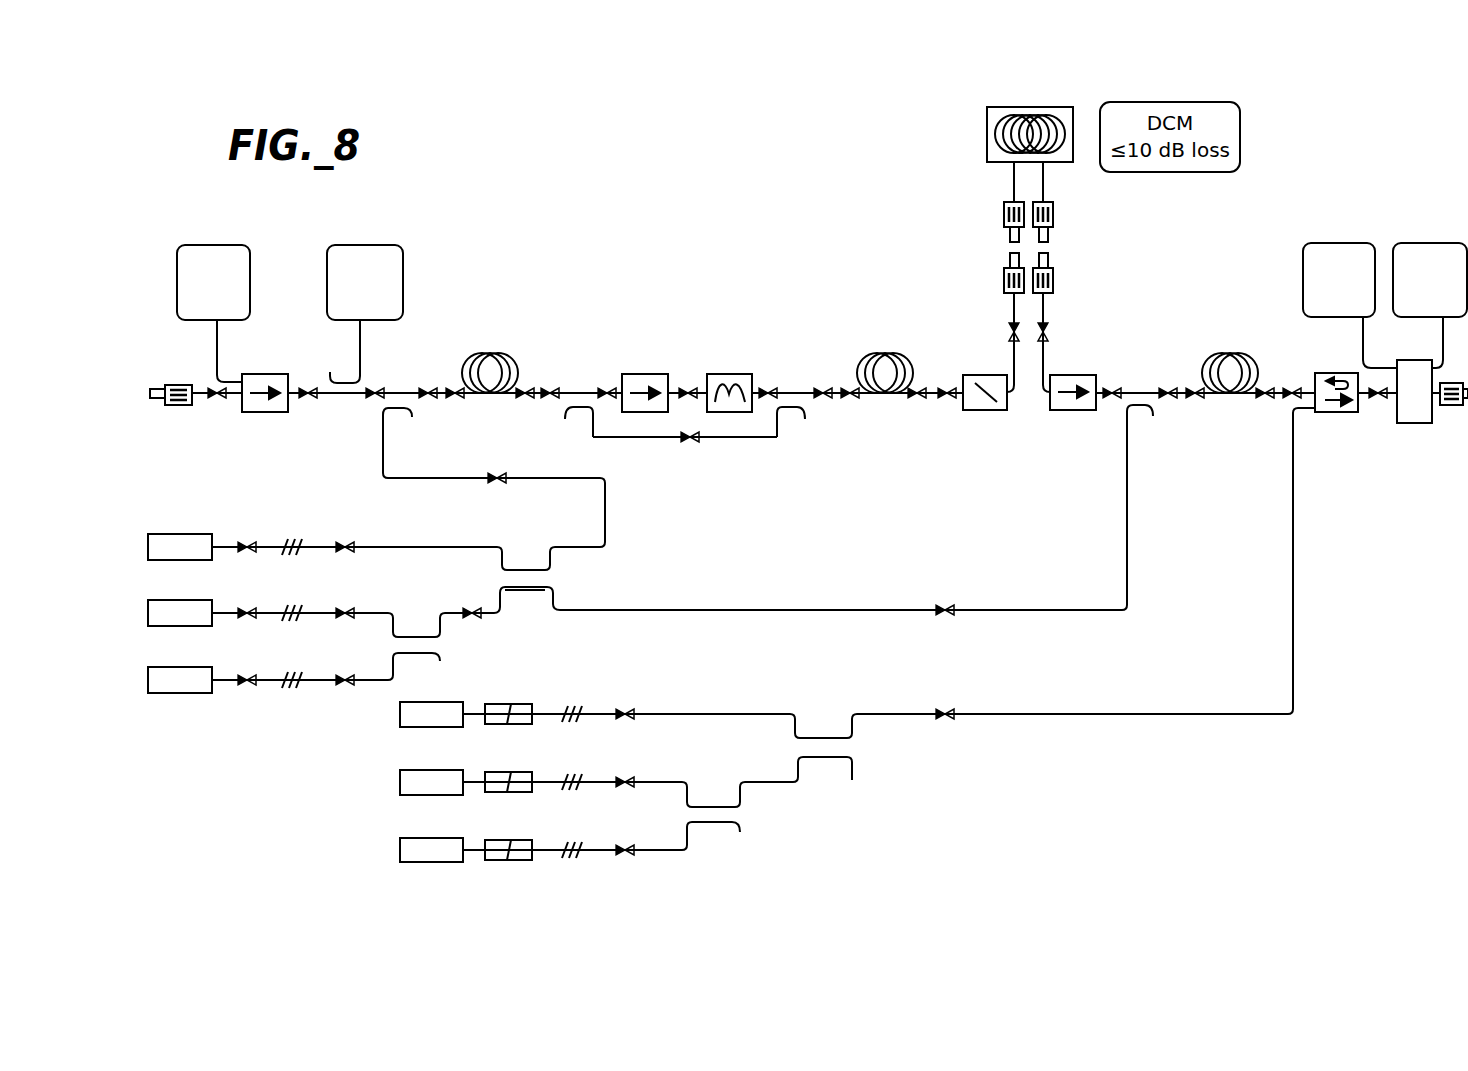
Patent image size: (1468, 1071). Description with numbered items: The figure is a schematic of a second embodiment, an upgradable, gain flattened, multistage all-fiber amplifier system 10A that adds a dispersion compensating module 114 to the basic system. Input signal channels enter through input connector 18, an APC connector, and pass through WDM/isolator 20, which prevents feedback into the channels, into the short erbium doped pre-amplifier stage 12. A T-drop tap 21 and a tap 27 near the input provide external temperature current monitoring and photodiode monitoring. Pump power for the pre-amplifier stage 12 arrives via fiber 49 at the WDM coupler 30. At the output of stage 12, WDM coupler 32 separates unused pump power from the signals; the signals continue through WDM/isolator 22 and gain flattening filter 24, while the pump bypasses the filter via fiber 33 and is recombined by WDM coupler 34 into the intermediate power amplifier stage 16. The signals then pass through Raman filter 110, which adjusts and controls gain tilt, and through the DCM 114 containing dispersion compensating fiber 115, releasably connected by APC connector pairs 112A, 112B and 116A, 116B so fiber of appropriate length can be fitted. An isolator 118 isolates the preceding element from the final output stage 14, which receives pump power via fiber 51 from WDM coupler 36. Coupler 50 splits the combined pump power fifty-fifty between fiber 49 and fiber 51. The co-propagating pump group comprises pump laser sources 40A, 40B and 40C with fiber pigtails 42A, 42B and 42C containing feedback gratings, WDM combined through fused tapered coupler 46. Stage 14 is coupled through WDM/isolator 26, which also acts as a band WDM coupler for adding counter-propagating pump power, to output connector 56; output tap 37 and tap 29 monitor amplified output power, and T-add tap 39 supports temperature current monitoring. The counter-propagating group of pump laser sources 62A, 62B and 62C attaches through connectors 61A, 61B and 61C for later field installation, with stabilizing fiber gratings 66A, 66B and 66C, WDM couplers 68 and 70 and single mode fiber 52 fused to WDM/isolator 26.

The multistage amplifier system 10A is at (1321, 157).
The input connector 18 is at (172, 407).
The WDM/isolator 20 is at (258, 414).
The T-drop tap 21 is at (217, 330).
The tap 27 is at (360, 330).
The input or pre-amplifier stage 12 is at (503, 353).
The 980/1550 band WDM coupler 30 is at (400, 413).
The fiber 49 is at (478, 478).
The WDM/isolator 22 is at (640, 372).
The gain flattening filter 24 is at (722, 372).
The intermediate power fiber amplifier stage 16 is at (875, 352).
The 980 nm band/1550 nm band WDM coupler 32 is at (578, 410).
The bypass fiber 33 is at (707, 440).
The WDM coupler 34 is at (797, 410).
The dispersion compensating module 114 is at (987, 142).
The dispersion compensating fiber 115 is at (1013, 113).
The APC connector 112B is at (1004, 215).
The APC connector 116B is at (1054, 213).
The APC connector 112A is at (1004, 285).
The APC connector 116A is at (1054, 283).
The Raman filter 110 is at (980, 410).
The isolator 118 is at (1065, 373).
The output or power amplifier stage 14 is at (1218, 352).
The 980/1550 band WDM coupler 36 is at (1140, 412).
The fiber 51 is at (748, 610).
The coupler 50 is at (523, 588).
The WDM/isolator 26 is at (1330, 412).
The output tap 37 is at (1414, 391).
The output connector 56 is at (1452, 405).
The tap 29 is at (1362, 348).
The T-add tap 39 is at (1443, 348).
The pump laser source 40A is at (175, 534).
The fiber pigtail 42A is at (302, 540).
The pump laser source 40B is at (175, 600).
The fiber pigtail 42B is at (302, 608).
The pump laser source 40C is at (175, 667).
The fiber pigtail 42C is at (302, 675).
The WDM fused tapered coupler 46 is at (418, 655).
The pump laser source 62A is at (400, 715).
The connector 61A is at (500, 704).
The stabilizing fiber grating 66A is at (583, 711).
The single mode fiber 52 is at (1297, 480).
The pump laser source 62B is at (400, 782).
The connector 61B is at (500, 772).
The stabilizing fiber grating 66B is at (583, 779).
The WDM coupler 70 is at (818, 758).
The pump laser source 62C is at (400, 850).
The connector 61C is at (500, 840).
The stabilizing fiber grating 66C is at (583, 847).
The WDM coupler 68 is at (715, 825).